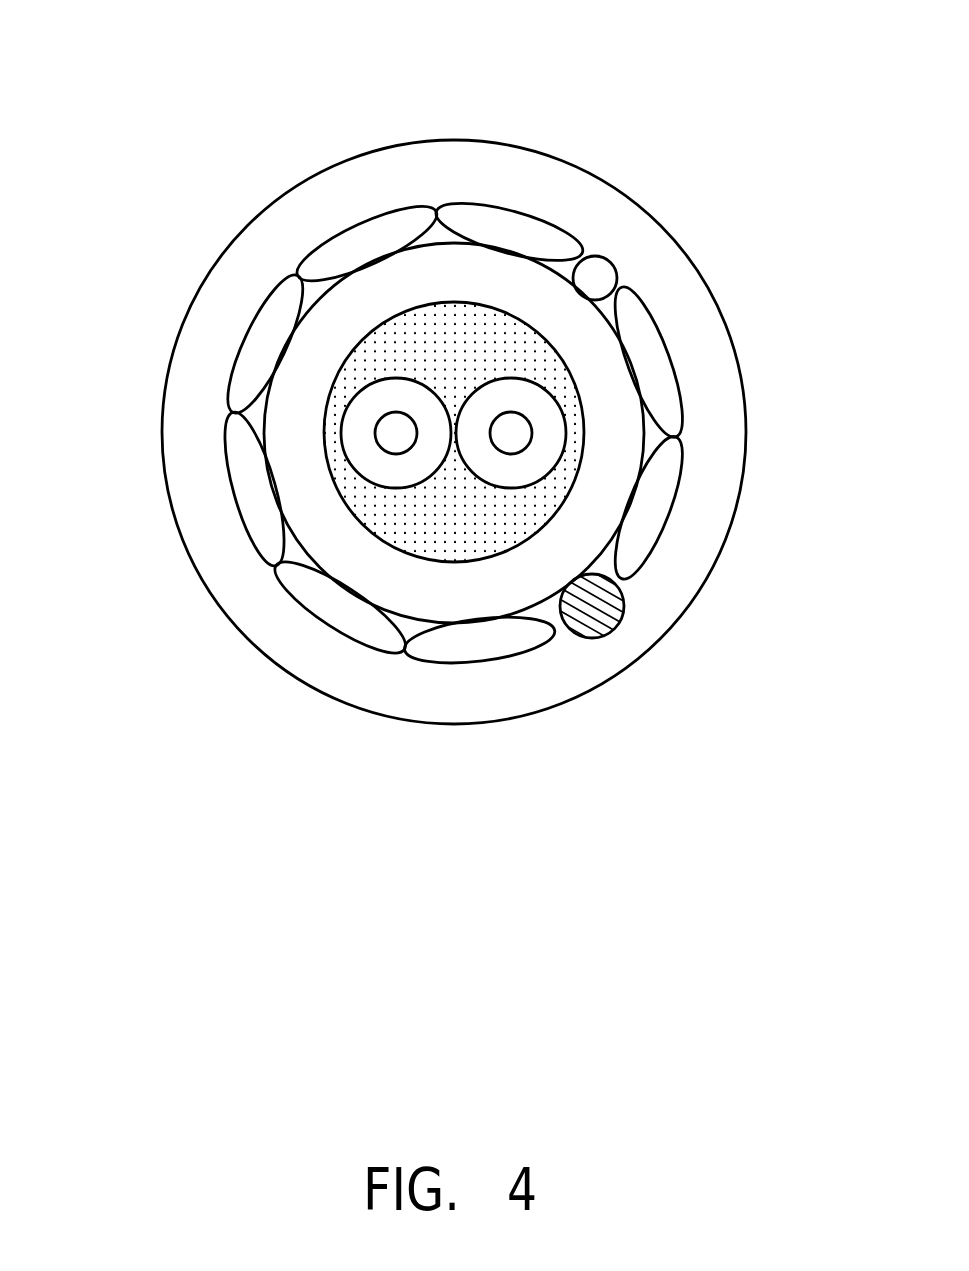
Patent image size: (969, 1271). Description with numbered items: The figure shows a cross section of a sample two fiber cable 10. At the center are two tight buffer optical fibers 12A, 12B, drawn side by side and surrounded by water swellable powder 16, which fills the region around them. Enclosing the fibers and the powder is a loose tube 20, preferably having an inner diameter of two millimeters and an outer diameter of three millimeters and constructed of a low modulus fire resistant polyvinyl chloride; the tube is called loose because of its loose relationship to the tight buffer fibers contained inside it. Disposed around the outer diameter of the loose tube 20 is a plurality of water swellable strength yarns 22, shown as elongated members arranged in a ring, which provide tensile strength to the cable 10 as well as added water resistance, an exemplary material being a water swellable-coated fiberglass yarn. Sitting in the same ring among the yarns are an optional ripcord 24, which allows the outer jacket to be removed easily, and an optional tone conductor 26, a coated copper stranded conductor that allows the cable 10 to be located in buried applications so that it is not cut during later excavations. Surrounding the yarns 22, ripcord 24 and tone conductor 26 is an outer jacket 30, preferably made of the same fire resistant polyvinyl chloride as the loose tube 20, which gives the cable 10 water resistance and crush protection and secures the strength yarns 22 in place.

The cable 10 is at (213, 147).
The tight buffer optical fiber 12A is at (363, 412).
The tight buffer optical fiber 12B is at (548, 435).
The water swellable powder 16 is at (392, 518).
The loose tube 20 is at (612, 378).
The water swellable strength yarns 22 is at (502, 226).
The ripcord 24 is at (612, 267).
The tone conductor 26 is at (600, 620).
The outer jacket 30 is at (458, 710).